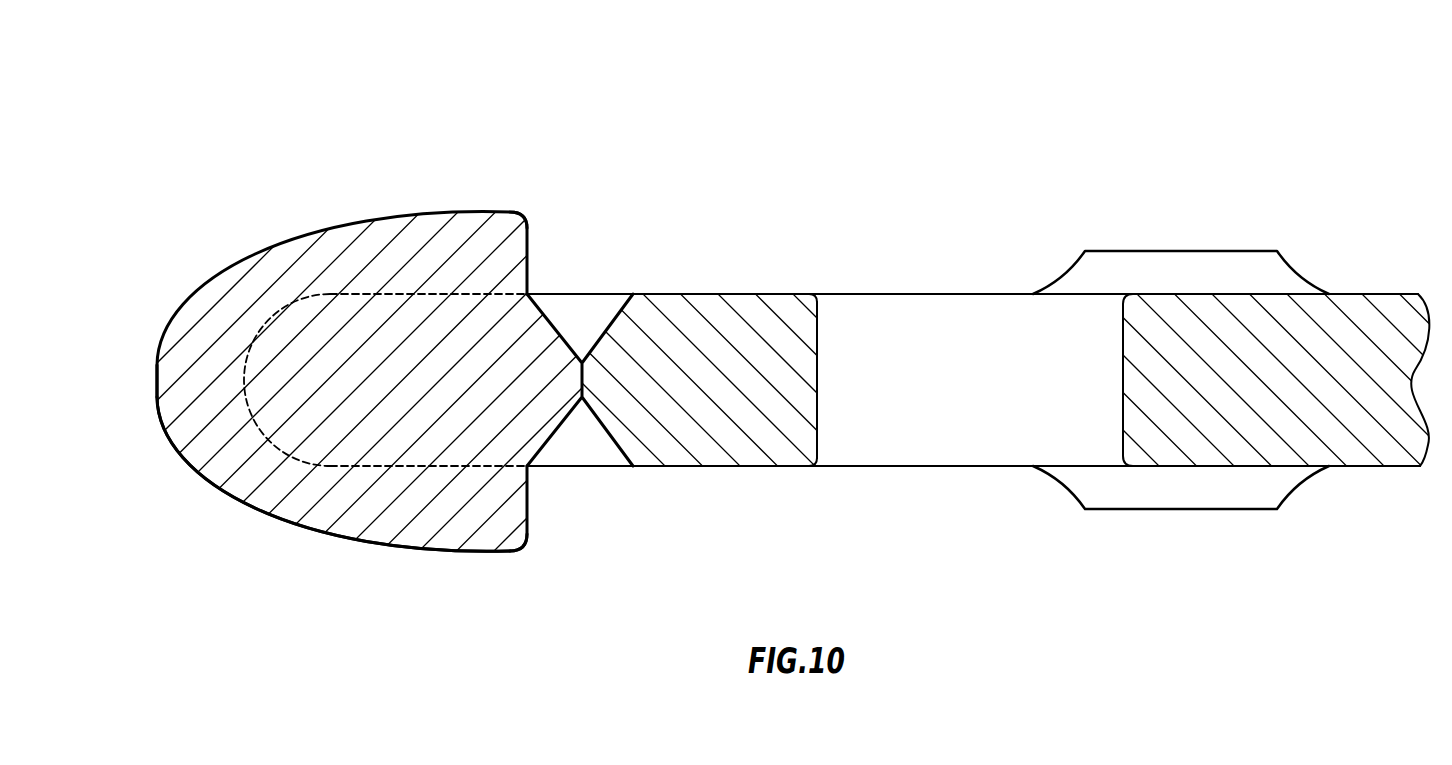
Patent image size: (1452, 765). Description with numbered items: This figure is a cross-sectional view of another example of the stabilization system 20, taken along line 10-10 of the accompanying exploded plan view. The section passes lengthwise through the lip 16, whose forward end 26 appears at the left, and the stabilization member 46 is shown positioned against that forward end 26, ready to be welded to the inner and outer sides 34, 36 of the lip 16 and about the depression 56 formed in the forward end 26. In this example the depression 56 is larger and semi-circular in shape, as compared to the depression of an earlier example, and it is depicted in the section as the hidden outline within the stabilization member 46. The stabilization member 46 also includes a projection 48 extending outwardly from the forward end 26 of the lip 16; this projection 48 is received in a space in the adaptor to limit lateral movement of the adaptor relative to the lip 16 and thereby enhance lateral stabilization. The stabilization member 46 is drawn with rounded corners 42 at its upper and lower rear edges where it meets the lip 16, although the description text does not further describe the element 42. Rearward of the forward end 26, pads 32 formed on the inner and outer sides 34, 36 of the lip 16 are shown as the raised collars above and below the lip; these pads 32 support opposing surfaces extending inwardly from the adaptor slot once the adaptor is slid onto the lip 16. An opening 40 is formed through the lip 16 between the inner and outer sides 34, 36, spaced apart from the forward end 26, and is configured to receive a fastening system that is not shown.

The line 10- 10 is at (258, 130).
The lip 16 is at (1387, 282).
The stabilization system 20 is at (584, 222).
The forward end 26 is at (243, 368).
The pads 32 is at (1200, 251).
The inner side 34 is at (670, 293).
The outer side 36 is at (717, 467).
The opening 40 is at (818, 337).
The rounded corner 42 is at (507, 210).
The stabilization member 46 is at (256, 515).
The projection 48 is at (157, 375).
The depression 56 is at (580, 372).